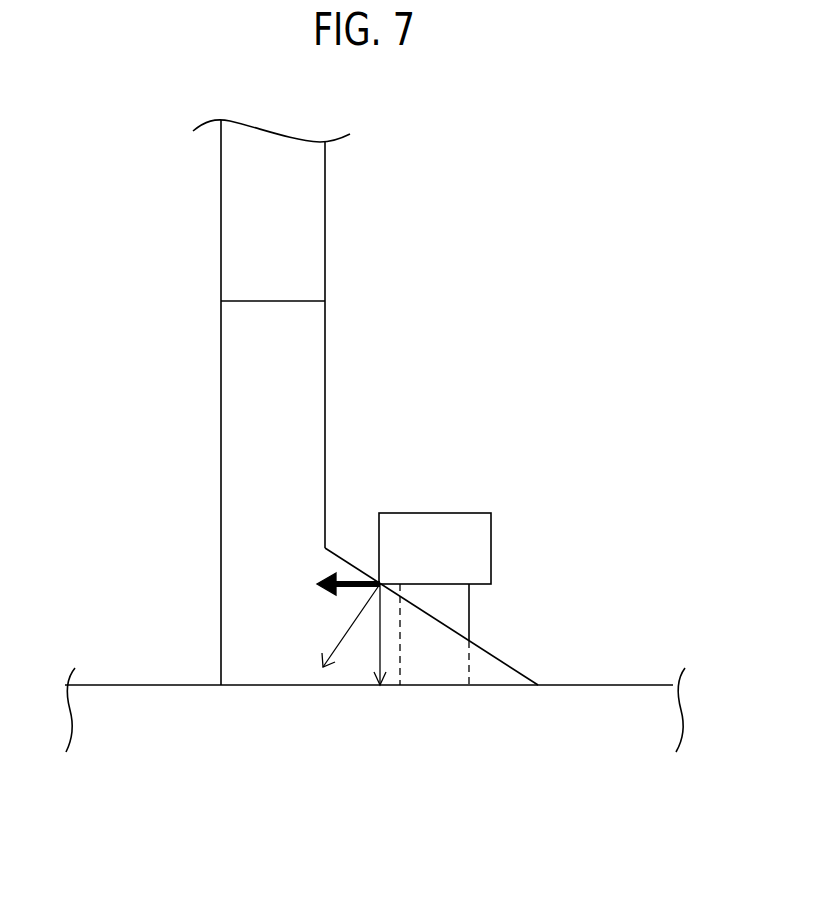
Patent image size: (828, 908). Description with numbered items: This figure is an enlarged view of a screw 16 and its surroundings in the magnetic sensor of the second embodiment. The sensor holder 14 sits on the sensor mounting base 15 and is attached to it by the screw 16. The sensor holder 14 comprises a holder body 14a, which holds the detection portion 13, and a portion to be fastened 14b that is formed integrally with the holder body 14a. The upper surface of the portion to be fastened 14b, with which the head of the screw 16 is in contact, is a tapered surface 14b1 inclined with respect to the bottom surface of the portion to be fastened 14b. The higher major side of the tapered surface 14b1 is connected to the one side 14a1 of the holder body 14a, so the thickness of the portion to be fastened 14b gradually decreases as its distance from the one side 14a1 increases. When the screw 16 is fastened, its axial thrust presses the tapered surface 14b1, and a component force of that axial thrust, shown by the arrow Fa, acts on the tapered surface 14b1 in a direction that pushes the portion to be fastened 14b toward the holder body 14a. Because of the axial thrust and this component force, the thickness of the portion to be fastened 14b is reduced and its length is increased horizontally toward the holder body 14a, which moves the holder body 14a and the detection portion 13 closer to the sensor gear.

The detection portion 13 is at (240, 217).
The sensor holder 14 is at (400, 562).
The holder body 14a is at (321, 534).
The one side of the holder body 14a1 is at (326, 355).
The portion to be fastened 14b is at (452, 675).
The tapered surface 14b1 is at (495, 657).
The sensor mounting base 15 is at (147, 685).
The screw 16 is at (467, 527).
The component force of the axial thrust Fa is at (332, 573).